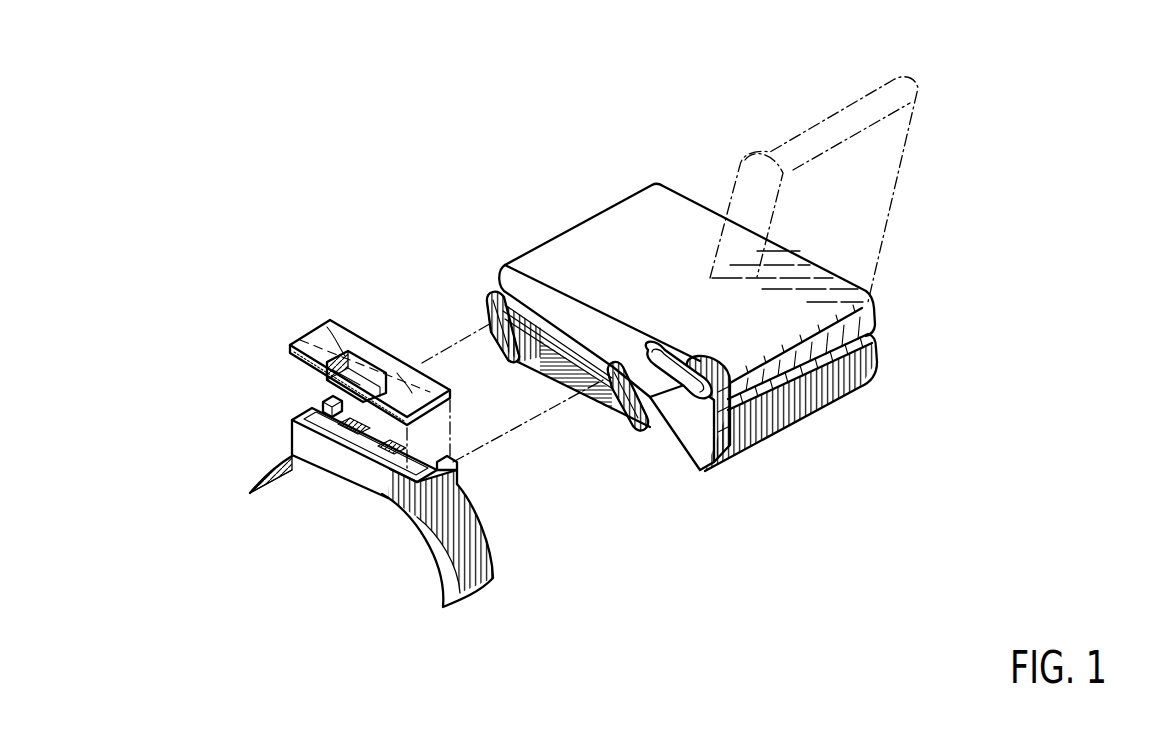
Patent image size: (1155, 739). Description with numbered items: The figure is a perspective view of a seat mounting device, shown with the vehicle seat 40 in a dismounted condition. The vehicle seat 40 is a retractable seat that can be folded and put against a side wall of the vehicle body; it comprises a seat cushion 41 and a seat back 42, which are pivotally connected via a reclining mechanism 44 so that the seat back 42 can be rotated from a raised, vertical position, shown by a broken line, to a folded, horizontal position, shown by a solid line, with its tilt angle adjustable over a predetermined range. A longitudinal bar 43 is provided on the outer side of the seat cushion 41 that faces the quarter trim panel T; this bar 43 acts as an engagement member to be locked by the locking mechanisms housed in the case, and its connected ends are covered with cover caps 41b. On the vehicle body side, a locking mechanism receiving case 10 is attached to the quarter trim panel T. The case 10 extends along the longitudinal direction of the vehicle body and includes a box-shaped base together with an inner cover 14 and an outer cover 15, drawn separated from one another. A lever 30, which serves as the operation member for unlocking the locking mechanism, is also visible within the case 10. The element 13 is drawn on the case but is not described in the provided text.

The locking mechanism receiving case 10 is at (284, 353).
The engaging projection 13 is at (457, 483).
The inner cover 14 is at (373, 463).
The outer cover 15 is at (357, 337).
The lever 30 is at (340, 452).
The vehicle seat 40 is at (644, 137).
The seat cushion 41 is at (793, 412).
The cover caps 41b is at (483, 300).
The seat back 42 is at (585, 233).
The longitudinal bar 43 is at (553, 332).
The reclining mechanism 44 is at (688, 442).
The quarter trim panel T is at (477, 547).